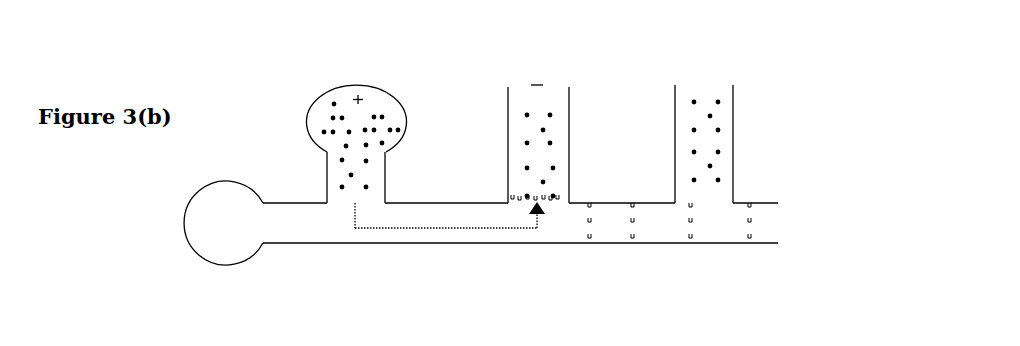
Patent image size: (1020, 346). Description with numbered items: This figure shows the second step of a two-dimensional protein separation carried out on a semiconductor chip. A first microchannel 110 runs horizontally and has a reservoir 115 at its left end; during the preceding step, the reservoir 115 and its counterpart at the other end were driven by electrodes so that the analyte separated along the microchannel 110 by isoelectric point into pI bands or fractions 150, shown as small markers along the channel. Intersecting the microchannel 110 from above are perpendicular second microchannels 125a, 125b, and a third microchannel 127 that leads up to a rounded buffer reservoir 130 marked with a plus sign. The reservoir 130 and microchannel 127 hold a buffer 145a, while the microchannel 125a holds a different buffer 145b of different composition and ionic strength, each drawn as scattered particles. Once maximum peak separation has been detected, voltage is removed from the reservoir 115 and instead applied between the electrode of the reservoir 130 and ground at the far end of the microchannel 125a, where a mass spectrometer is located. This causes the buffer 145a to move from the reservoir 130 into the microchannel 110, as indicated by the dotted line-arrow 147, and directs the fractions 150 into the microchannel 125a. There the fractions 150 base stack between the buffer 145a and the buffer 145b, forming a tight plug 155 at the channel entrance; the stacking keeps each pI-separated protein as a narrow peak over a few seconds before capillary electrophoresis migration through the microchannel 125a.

The first microchannel 110 is at (395, 254).
The reservoir 115 is at (182, 247).
The second microchannel 125a is at (580, 121).
The second microchannel 125b is at (742, 130).
The third microchannel 127 is at (313, 180).
The reservoir 130 is at (339, 77).
The buffer 145a is at (324, 131).
The buffer 145b is at (526, 142).
The line-arrow 147 is at (371, 230).
The pI bands or fractions 150 is at (588, 230).
The plug 155 is at (549, 195).